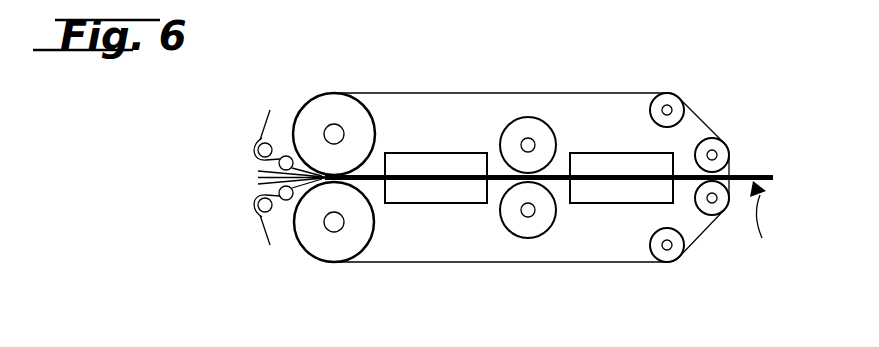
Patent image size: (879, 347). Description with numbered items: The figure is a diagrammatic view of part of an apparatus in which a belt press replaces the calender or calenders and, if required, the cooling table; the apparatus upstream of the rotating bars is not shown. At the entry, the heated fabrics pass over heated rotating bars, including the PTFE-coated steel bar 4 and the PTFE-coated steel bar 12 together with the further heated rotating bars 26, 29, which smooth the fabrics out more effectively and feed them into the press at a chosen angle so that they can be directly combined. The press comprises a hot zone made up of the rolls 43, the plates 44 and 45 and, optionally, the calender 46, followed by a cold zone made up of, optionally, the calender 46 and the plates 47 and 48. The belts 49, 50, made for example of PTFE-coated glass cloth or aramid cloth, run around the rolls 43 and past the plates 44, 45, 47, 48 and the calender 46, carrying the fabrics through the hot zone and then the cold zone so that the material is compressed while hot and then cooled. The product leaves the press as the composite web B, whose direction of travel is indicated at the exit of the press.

The PTFE-coated steel bar 4 is at (263, 143).
The PTFE-coated steel bar 12 is at (262, 214).
The heated rotating bar 26 is at (288, 155).
The heated rotating bar 29 is at (288, 201).
The rolls 43 is at (355, 106).
The plate 44 is at (428, 162).
The plate 45 is at (428, 197).
The calender 46 is at (533, 127).
The plate 47 is at (643, 162).
The plate 48 is at (643, 195).
The belt 49 is at (710, 118).
The belt 50 is at (490, 262).
The composite web B is at (767, 222).